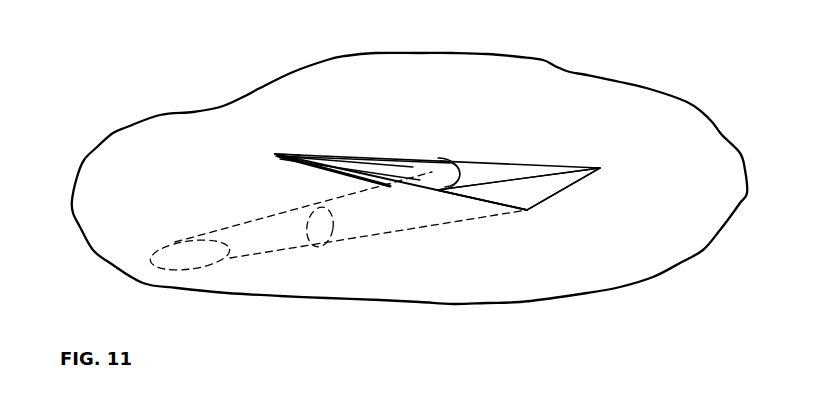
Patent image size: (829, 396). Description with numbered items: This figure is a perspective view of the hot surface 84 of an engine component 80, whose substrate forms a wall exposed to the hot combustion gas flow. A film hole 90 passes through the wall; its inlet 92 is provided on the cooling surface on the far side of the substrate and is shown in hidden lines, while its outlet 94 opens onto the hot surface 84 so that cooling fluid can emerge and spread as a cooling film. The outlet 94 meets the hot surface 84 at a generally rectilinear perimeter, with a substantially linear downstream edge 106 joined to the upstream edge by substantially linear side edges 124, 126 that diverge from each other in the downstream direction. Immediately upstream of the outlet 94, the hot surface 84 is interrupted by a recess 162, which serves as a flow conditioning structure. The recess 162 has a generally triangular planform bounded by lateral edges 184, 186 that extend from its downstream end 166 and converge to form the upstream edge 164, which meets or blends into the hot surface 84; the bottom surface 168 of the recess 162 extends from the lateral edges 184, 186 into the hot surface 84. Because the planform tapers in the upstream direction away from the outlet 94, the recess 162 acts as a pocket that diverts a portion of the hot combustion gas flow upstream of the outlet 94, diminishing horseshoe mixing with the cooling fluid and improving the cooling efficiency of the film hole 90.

The engine component 80 is at (198, 132).
The hot surface 84 is at (228, 141).
The film hole 90 is at (321, 250).
The inlet 92 is at (176, 249).
The outlet 94 is at (471, 184).
The downstream edge 106 is at (553, 196).
The side edge 124 is at (523, 160).
The side edge 126 is at (470, 199).
The recess 162 is at (321, 146).
The upstream edge 164 is at (275, 154).
The downstream end 166 is at (437, 162).
The bottom surface 168 is at (377, 167).
The lateral edge 184 is at (356, 155).
The lateral edge 186 is at (333, 170).